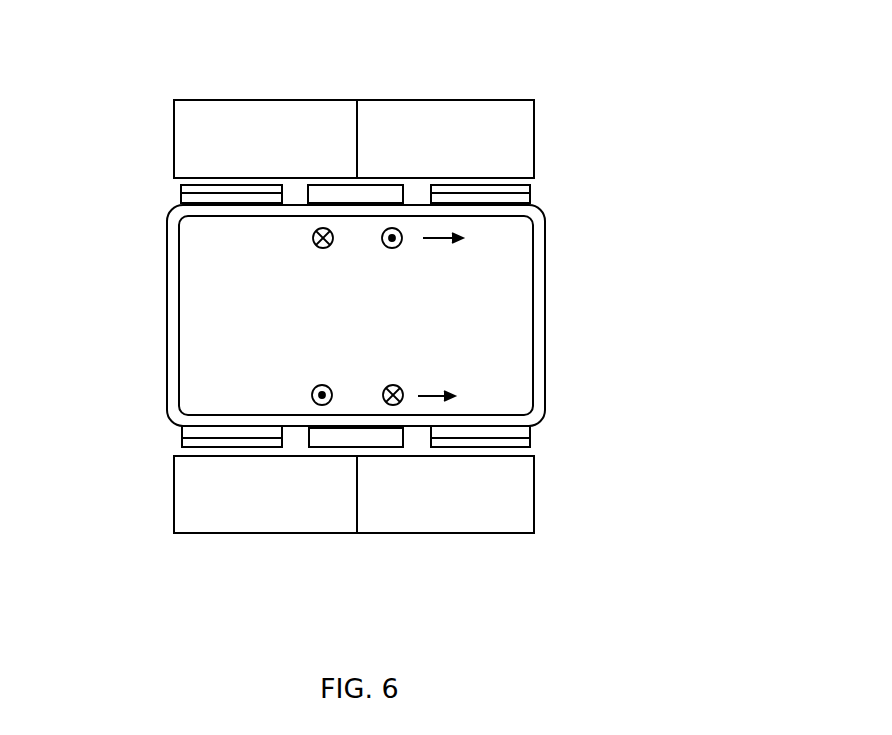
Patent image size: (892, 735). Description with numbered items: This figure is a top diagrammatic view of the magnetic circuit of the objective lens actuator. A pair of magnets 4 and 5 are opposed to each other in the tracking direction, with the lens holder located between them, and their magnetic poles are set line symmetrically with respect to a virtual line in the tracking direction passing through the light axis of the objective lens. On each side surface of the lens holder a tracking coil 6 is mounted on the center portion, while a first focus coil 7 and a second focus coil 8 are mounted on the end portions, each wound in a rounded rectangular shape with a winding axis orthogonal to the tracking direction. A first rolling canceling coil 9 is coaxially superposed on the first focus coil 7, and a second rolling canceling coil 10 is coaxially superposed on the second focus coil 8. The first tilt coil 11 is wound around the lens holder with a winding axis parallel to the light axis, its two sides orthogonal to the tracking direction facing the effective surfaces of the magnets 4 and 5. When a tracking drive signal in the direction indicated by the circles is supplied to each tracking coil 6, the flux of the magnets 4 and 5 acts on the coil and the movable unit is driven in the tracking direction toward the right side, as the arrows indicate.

The magnet 4 is at (405, 100).
The magnet 5 is at (380, 528).
The tracking coil 6 is at (335, 195).
The first focus coil 7 is at (530, 198).
The second focus coil 8 is at (181, 198).
The first rolling canceling coil 9 is at (530, 188).
The second rolling canceling coil 10 is at (181, 188).
The first tilt coil 11 is at (167, 313).